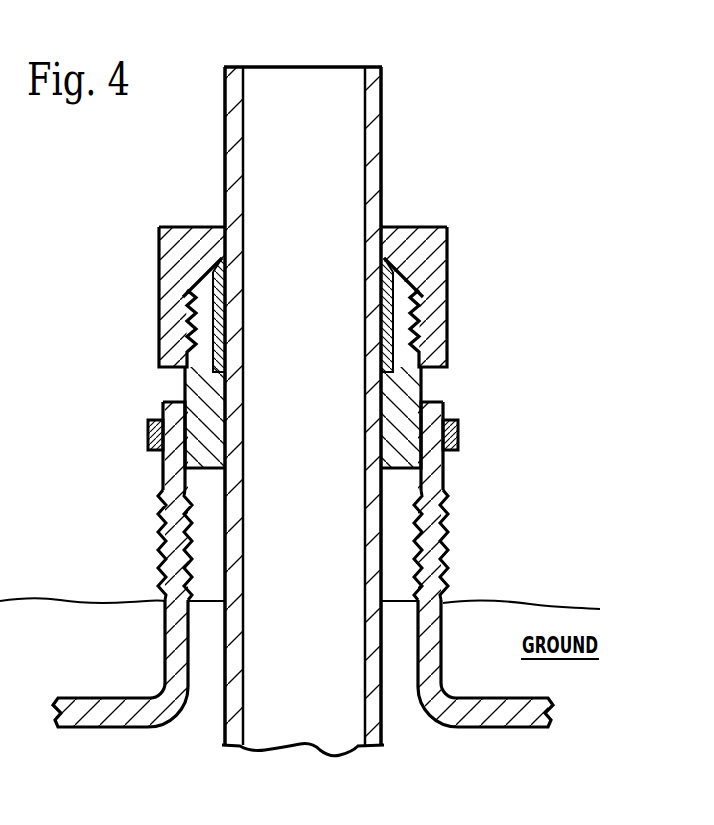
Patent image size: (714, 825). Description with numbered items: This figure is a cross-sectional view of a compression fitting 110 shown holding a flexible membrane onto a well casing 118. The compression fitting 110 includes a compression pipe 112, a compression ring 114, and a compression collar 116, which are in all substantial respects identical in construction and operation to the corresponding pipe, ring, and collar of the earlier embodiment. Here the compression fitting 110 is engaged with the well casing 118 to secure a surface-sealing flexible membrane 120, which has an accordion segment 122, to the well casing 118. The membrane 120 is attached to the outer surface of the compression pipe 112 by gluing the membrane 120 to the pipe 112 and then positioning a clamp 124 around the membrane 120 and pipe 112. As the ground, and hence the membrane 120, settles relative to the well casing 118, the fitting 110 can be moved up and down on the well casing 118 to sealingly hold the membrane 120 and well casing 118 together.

The compression fitting 110 is at (311, 457).
The compression pipe 112 is at (403, 399).
The compression ring 114 is at (385, 254).
The compression collar 116 is at (436, 250).
The well casing 118 is at (372, 108).
The surface-sealing flexible membrane 120 is at (445, 480).
The accordion segment 122 is at (450, 548).
The clamp 124 is at (150, 431).